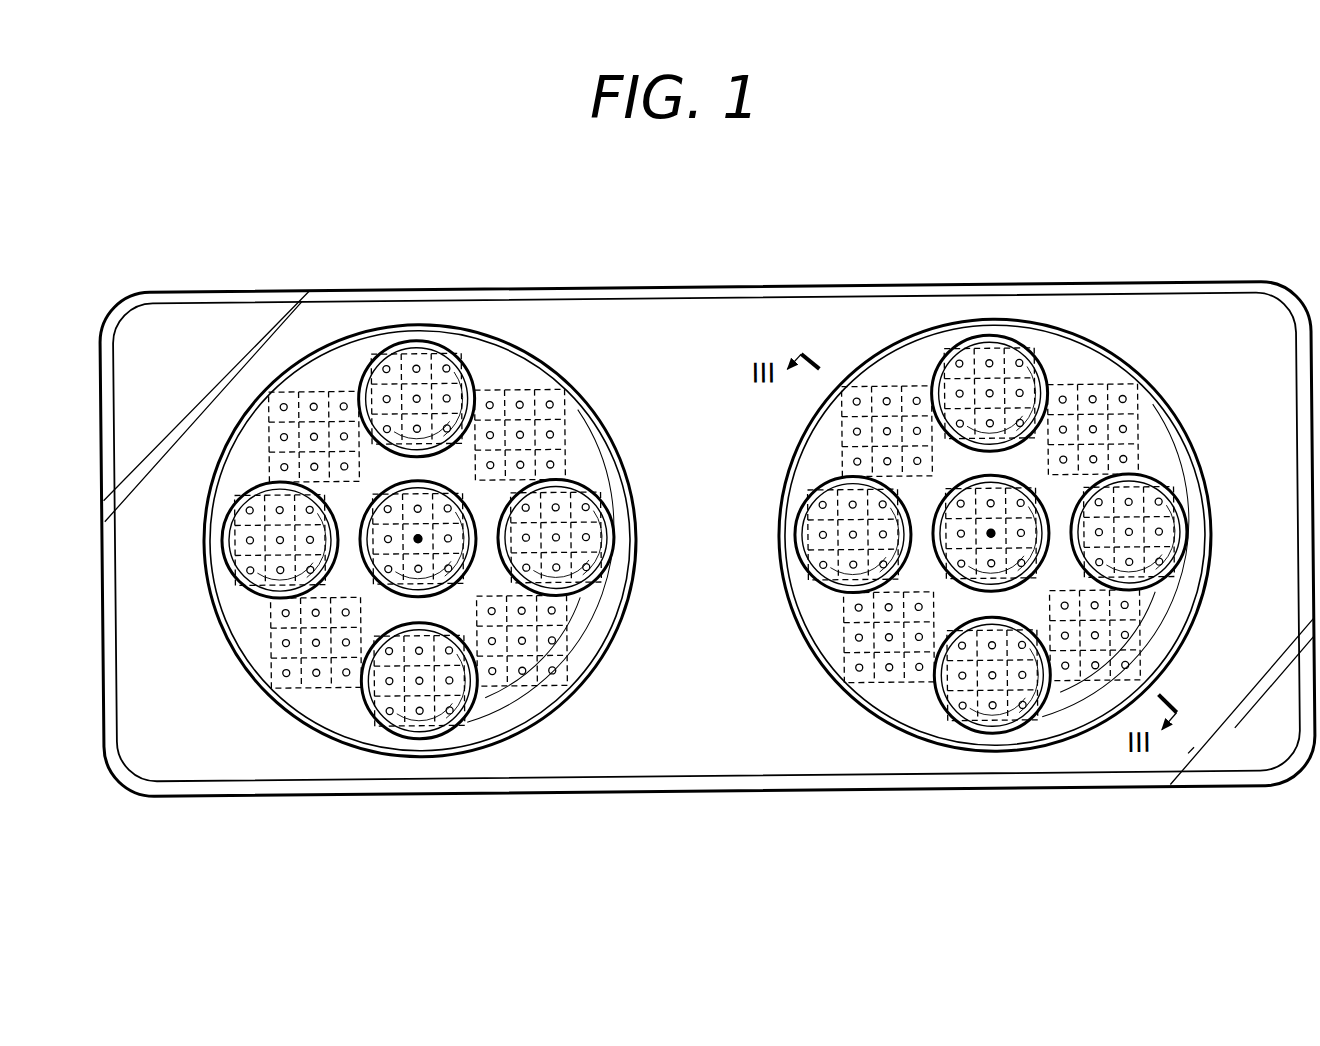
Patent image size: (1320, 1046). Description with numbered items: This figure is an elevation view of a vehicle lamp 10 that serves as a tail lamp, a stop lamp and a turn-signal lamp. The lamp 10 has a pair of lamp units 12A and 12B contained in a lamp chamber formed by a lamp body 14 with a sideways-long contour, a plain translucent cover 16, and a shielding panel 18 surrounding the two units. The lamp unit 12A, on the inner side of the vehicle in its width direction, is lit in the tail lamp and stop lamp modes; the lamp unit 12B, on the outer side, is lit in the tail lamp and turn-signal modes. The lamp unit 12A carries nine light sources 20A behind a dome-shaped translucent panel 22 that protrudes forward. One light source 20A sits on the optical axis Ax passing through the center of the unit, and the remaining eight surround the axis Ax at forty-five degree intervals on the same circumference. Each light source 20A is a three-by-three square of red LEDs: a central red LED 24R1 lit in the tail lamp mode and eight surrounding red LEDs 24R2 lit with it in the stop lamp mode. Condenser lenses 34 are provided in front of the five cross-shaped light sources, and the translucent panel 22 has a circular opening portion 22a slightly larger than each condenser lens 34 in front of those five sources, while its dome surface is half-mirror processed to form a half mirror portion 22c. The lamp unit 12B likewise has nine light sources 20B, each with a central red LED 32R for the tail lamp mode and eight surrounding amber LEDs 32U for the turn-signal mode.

The vehicle lamp 10 is at (1043, 182).
The lamp body 14 is at (734, 283).
The translucent cover 16 is at (207, 406).
The shielding panel 18 is at (708, 752).
The lamp unit 12A is at (1089, 323).
The lamp unit 12B is at (518, 324).
The light source 20A is at (937, 597).
The light source 20B is at (362, 596).
The translucent panel 22 is at (568, 375).
The opening portion 22a is at (266, 480).
The half mirror portion 22c is at (582, 612).
The condenser lens 34 is at (238, 542).
The amber LED 32U is at (418, 364).
The red LED 32R is at (418, 396).
The red LED 24R2 is at (991, 364).
The red LED 24R1 is at (991, 396).
The optical axis Ax is at (418, 536).